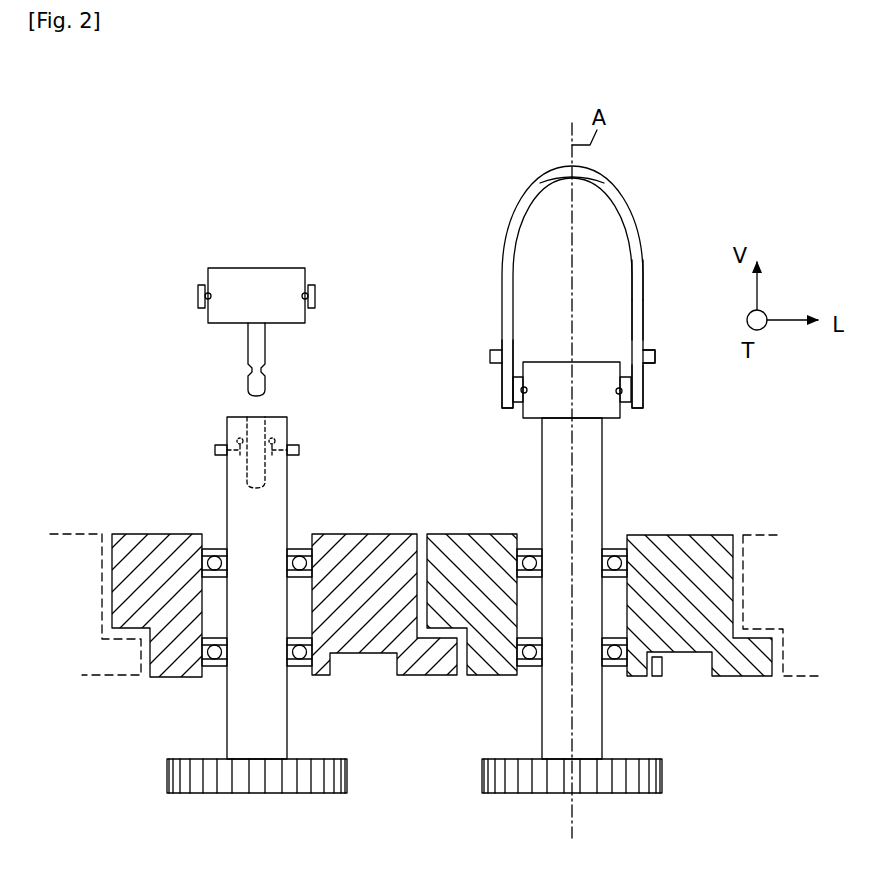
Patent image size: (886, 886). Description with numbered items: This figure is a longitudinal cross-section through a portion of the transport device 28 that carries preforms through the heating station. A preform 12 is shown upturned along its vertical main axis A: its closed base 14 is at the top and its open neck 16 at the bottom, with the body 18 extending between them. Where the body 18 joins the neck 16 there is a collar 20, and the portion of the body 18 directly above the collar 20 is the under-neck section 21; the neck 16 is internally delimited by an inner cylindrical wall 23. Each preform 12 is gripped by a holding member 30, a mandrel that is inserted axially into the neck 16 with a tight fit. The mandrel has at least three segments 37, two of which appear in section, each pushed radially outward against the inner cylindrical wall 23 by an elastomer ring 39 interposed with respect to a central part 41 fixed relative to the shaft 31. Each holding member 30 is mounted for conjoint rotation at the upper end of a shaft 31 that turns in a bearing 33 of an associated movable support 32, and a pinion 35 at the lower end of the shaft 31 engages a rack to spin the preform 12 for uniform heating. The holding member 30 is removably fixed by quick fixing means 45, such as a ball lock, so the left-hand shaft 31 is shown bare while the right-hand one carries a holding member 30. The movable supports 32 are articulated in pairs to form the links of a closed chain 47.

The preform 12 is at (680, 232).
The base 14 is at (540, 183).
The neck 16 is at (641, 368).
The body 18 is at (637, 278).
The collar 20 is at (653, 356).
The under-neck section 21 is at (636, 327).
The inner cylindrical wall 23 is at (514, 350).
The transport device 28 is at (700, 140).
The holding member 30 is at (422, 326).
The shaft 31 is at (232, 512).
The movable support 32 is at (362, 636).
The bearing 33 is at (538, 540).
The pinion 35 is at (297, 785).
The segment 37 is at (200, 295).
The ring 39 is at (304, 293).
The central part 41 is at (232, 270).
The quick fixing means 45 is at (208, 443).
The closed chain 47 is at (731, 712).